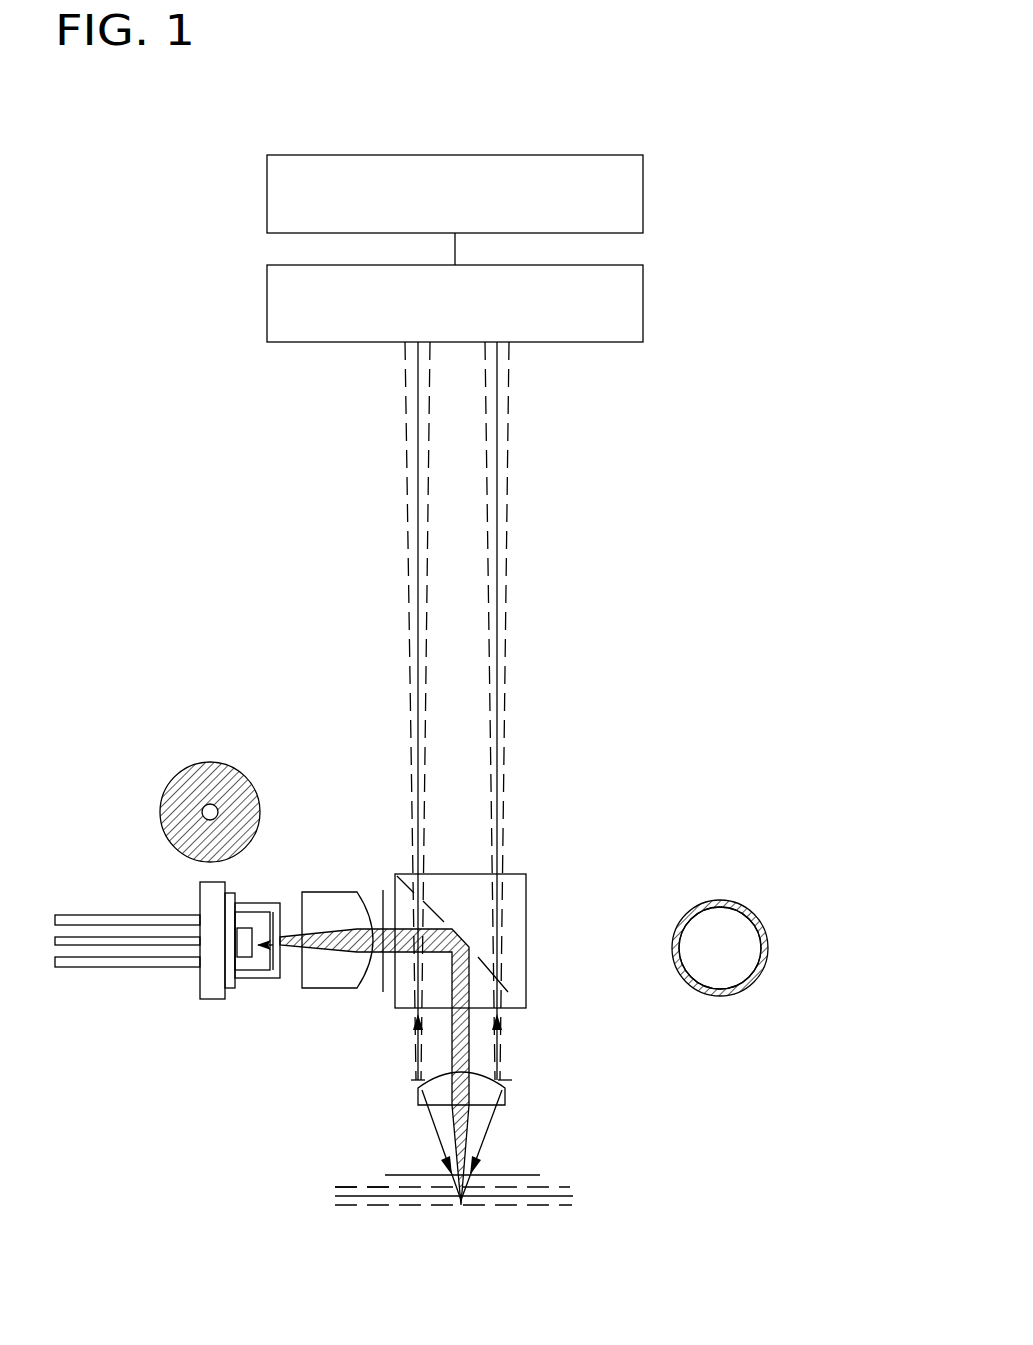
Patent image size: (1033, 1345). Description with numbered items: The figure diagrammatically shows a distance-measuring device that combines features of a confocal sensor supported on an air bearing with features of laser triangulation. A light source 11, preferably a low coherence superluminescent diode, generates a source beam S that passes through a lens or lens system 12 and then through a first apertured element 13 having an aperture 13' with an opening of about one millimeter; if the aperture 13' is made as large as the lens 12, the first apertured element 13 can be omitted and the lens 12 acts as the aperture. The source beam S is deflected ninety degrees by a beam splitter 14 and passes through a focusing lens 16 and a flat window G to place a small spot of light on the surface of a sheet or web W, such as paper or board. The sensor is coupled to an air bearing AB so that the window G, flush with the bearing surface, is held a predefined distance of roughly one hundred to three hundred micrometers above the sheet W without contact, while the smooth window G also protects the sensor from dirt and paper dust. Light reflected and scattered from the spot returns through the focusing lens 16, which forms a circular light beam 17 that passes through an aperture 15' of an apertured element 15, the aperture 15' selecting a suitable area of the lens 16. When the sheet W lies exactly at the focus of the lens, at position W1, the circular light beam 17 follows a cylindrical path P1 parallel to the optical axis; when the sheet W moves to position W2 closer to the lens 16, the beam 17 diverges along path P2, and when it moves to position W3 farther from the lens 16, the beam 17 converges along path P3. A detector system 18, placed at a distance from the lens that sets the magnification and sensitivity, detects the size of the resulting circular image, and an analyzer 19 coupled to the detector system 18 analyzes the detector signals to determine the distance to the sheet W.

The light source 11 is at (240, 950).
The lens 12 is at (332, 982).
The first apertured element 13 is at (321, 874).
The aperture 13' is at (182, 774).
The beam splitter 14 is at (527, 900).
The apertured element 15 is at (640, 966).
The aperture 15' is at (770, 948).
The focusing lens 16 is at (515, 1092).
The circular light beam 17 is at (508, 637).
The detector system 18 is at (653, 307).
The analyzer 19 is at (653, 202).
The source beam S is at (367, 945).
The window G is at (420, 1173).
The air bearing AB is at (368, 1178).
The sheet W is at (418, 1175).
The sheet position at focus W1 is at (573, 1191).
The sheet position closer to lens W2 is at (573, 1182).
The sheet position farther from lens W3 is at (572, 1205).
The cylindrical path P1 is at (377, 407).
The diverging path P2 is at (363, 380).
The converging path P3 is at (388, 433).